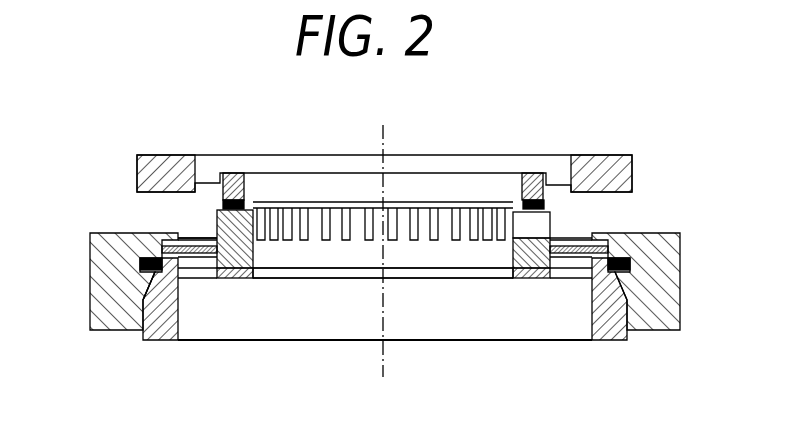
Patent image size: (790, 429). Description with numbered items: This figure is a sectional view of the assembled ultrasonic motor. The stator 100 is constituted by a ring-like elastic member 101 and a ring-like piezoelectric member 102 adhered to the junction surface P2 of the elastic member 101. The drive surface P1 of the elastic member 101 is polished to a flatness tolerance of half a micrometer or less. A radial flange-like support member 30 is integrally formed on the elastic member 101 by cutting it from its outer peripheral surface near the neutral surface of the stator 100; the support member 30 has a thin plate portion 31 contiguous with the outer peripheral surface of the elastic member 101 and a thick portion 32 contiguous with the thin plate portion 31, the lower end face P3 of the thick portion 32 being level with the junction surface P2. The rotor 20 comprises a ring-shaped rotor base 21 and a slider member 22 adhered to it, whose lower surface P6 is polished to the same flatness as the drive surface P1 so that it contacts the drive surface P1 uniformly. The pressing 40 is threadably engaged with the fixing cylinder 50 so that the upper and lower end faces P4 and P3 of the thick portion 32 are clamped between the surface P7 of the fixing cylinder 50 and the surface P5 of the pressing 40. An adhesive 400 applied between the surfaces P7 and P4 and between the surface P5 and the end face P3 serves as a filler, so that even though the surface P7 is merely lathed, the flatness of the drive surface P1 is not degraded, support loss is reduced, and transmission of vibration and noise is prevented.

The rotor 20 is at (614, 88).
The rotor base 21 is at (535, 185).
The slider member 22 is at (542, 203).
The support member 30 is at (688, 170).
The thin plate portion 31 is at (578, 236).
The thick portion 32 is at (600, 248).
The pressing 40 is at (613, 330).
The adhesive 400 is at (614, 274).
The fixing cylinder 50 is at (670, 281).
The stator 100 is at (350, 376).
The elastic member 101 is at (305, 255).
The piezoelectric member 102 is at (340, 272).
The drive surface P1 is at (248, 204).
The junction surface P2 is at (530, 279).
The lower end face P3 is at (152, 281).
The upper end face P4 is at (176, 244).
The surface of the pressing P5 is at (142, 262).
The lower surface P6 is at (218, 219).
The surface of the fixing cylinder P7 is at (178, 270).